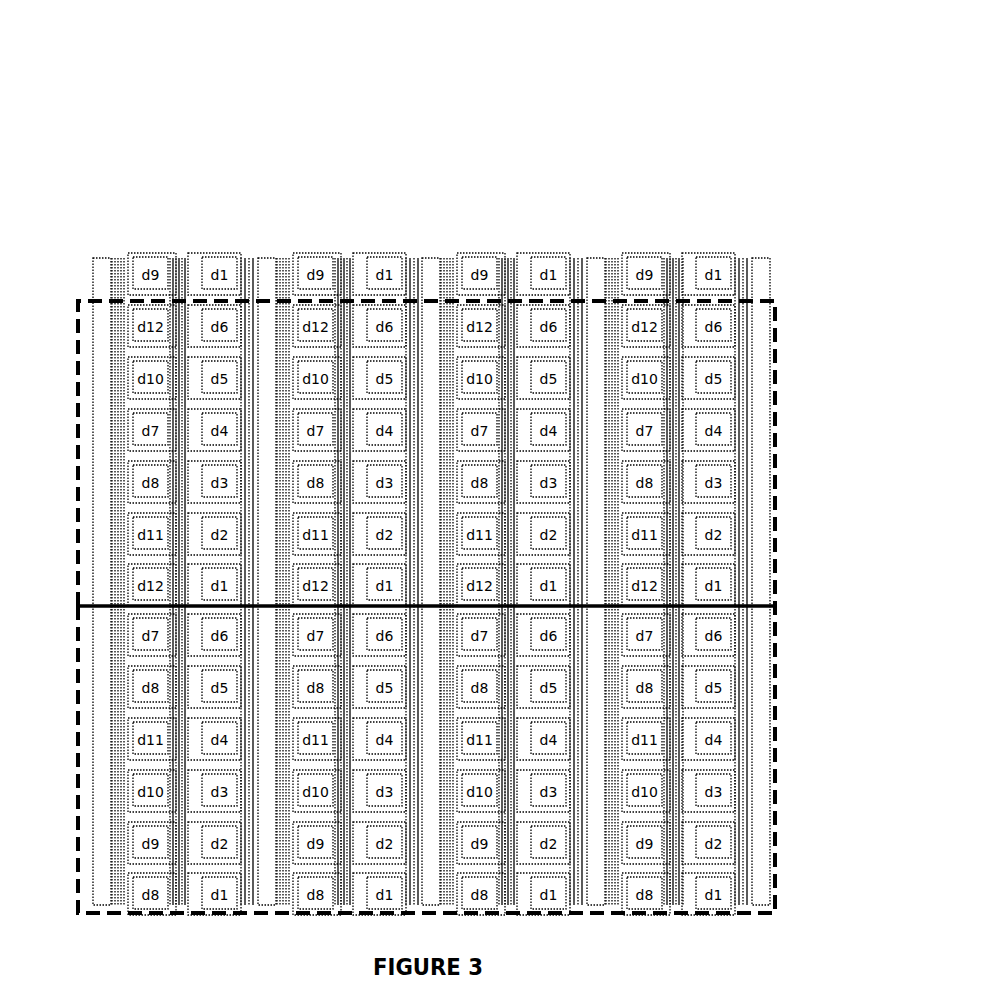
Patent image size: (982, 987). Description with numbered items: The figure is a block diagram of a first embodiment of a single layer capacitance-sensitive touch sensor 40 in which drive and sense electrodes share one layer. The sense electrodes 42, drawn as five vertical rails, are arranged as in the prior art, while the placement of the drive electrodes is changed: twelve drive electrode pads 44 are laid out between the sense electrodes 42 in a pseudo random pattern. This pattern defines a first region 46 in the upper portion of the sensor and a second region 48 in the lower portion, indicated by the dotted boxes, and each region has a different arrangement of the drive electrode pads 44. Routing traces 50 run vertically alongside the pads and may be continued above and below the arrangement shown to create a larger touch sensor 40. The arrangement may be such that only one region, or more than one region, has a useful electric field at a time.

The touch sensor 40 is at (473, 124).
The sense electrodes 42 is at (100, 258).
The drive electrode pads 44 is at (482, 256).
The first region 46 is at (780, 487).
The second region 48 is at (780, 722).
The routing traces 50 is at (685, 255).